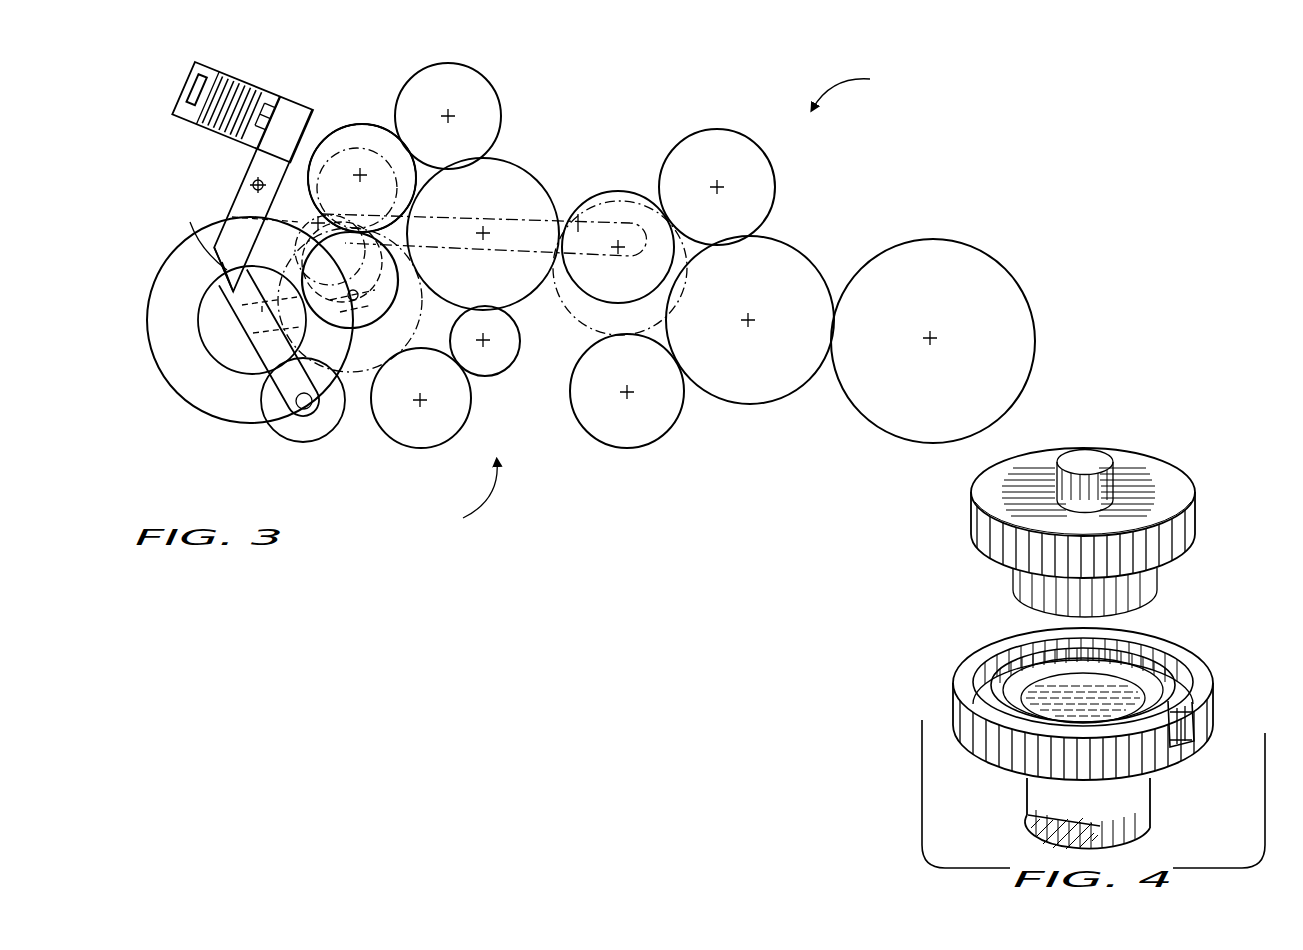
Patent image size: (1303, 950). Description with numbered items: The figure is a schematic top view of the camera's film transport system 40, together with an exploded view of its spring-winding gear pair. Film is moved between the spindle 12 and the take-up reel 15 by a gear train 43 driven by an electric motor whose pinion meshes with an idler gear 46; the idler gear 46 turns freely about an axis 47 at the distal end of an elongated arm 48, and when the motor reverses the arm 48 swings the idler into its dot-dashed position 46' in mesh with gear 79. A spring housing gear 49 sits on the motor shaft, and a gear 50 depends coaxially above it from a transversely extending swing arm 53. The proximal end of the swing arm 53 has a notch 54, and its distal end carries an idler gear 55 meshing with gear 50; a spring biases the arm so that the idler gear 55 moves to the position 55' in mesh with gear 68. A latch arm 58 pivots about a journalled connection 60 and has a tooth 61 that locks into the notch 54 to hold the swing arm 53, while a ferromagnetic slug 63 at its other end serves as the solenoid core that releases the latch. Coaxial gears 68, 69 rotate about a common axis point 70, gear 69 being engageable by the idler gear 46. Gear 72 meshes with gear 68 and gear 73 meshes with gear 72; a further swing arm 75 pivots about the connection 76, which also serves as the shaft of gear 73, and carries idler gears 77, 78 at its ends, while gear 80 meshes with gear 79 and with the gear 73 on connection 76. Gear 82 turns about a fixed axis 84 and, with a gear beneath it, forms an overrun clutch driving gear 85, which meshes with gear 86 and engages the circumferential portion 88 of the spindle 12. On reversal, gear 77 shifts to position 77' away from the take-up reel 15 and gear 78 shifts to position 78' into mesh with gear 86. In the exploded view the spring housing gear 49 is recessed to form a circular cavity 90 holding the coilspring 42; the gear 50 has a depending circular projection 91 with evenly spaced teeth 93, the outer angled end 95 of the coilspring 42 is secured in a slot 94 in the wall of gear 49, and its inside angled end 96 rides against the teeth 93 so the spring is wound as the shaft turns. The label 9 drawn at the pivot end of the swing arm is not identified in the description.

In FIG. 3, the spindle 12 is at (952, 262).
In FIG. 3, the take-up reel 15 is at (160, 330).
In FIG. 3, the film transport system 40 is at (858, 88).
In FIG. 4, the coilspring 42 is at (1158, 662).
In FIG. 3, the gear train 43 is at (465, 498).
In FIG. 3, the idler gear 46 is at (373, 277).
In FIG. 3, the shifted position of idler gear 46' is at (350, 339).
In FIG. 3, the axis 47 is at (355, 299).
In FIG. 3, the elongated arm 48 is at (290, 270).
In FIG. 4, the spring housing gear 49 is at (983, 748).
In FIG. 3, the gear 50 is at (230, 335).
In FIG. 4, the gear 50 is at (1197, 517).
In FIG. 3, the swing arm 53 is at (247, 372).
In FIG. 3, the notch 54 is at (214, 290).
In FIG. 3, the idler gear 55 is at (303, 415).
In FIG. 3, the meshing position of idler gear 55' is at (298, 214).
In FIG. 3, the latch arm 58 is at (295, 117).
In FIG. 3, the pivot point 60 is at (258, 181).
In FIG. 3, the tooth 61 is at (203, 234).
In FIG. 3, the slug 63 is at (258, 98).
In FIG. 3, the gear 68 is at (372, 130).
In FIG. 3, the gear 69 is at (362, 178).
In FIG. 3, the common axis point 70 is at (372, 163).
In FIG. 3, the gear 72 is at (495, 112).
In FIG. 3, the gear 73 is at (525, 177).
In FIG. 3, the swing arm 75 is at (578, 220).
In FIG. 3, the pivotal connection 76 is at (488, 232).
In FIG. 3, the idler gear 77 is at (388, 297).
In FIG. 3, the shifted position of idler gear 77' is at (357, 159).
In FIG. 3, the idler gear 78 is at (618, 223).
In FIG. 3, the shifted position of idler gear 78' is at (608, 279).
In FIG. 3, the gear 79 is at (413, 432).
In FIG. 3, the gear 80 is at (505, 362).
In FIG. 3, the gear 82 is at (760, 177).
In FIG. 3, the fixed axis 84 is at (740, 165).
In FIG. 3, the gear 85 is at (773, 380).
In FIG. 3, the gear 86 is at (660, 413).
In FIG. 3, the circumferential portion 88 is at (860, 410).
In FIG. 3, the pivot 9 is at (304, 401).
In FIG. 4, the circular cavity 90 is at (1192, 682).
In FIG. 4, the circular projection 91 is at (1013, 580).
In FIG. 4, the teeth 93 is at (1050, 613).
In FIG. 4, the slot 94 is at (1195, 742).
In FIG. 4, the outer angled end 95 is at (1203, 708).
In FIG. 4, the inside angled end 96 is at (1027, 684).